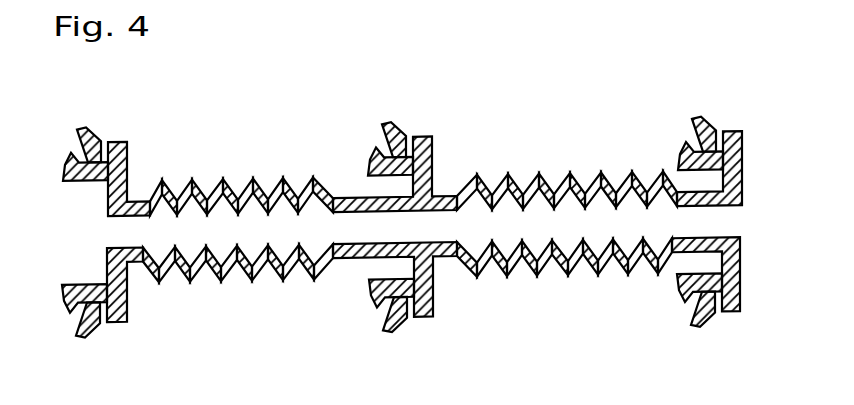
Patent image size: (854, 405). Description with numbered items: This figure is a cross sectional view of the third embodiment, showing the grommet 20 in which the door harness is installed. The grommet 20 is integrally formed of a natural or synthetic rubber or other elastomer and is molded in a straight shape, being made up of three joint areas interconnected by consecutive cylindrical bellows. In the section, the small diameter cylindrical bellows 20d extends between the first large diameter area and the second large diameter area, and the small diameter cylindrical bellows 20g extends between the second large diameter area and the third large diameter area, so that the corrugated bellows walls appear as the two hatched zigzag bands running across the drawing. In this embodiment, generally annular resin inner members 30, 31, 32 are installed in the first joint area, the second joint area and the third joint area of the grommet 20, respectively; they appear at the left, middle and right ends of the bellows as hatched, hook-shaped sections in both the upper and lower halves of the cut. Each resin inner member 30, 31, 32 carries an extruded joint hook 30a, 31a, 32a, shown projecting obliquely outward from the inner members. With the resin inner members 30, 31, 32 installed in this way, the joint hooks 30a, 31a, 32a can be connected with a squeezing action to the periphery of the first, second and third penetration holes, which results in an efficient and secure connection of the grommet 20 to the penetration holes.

The grommet 20 is at (262, 146).
The small diameter cylindrical bellows 20d is at (237, 273).
The small diameter cylindrical bellows 20g is at (552, 273).
The resin inner member 30 is at (682, 272).
The joint hook 30a is at (684, 149).
The resin inner member 31 is at (376, 274).
The joint hook 31a is at (375, 152).
The resin inner member 32 is at (66, 287).
The joint hook 32a is at (67, 156).